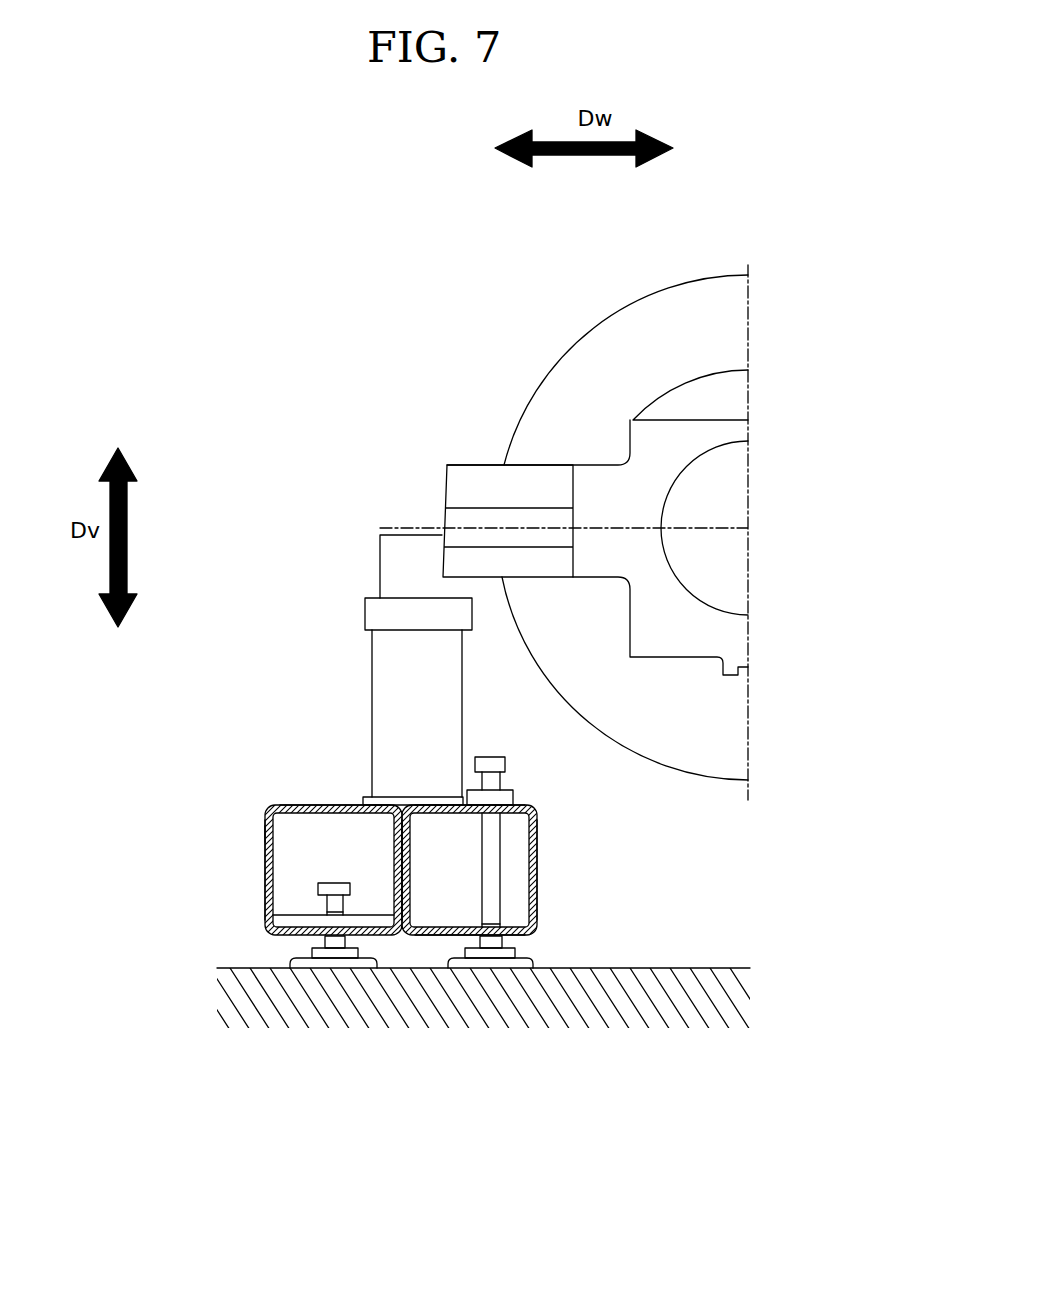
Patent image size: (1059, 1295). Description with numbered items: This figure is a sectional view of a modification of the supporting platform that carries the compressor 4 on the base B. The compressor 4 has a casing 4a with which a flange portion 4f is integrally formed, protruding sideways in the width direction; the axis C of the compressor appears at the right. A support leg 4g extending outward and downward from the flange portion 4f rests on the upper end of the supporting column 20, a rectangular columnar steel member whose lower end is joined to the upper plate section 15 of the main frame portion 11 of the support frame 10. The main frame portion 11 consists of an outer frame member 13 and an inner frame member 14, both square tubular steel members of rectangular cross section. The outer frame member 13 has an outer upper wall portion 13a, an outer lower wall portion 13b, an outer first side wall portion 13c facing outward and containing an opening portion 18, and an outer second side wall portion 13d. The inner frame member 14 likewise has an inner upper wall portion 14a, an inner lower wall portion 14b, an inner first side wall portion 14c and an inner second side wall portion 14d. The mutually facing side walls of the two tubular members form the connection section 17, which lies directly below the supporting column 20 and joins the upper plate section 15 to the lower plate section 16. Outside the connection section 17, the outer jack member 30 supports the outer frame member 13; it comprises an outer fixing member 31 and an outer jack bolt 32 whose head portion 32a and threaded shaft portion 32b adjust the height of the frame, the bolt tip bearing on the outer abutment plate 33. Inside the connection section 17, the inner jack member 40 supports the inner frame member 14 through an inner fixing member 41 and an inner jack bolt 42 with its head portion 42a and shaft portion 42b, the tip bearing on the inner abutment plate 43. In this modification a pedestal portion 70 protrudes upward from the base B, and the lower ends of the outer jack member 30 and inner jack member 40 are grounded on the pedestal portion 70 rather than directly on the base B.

The compressor 4 is at (607, 320).
The casing 4a is at (533, 393).
The flange portion 4f is at (438, 510).
The support leg 4g is at (397, 535).
The axis C is at (747, 527).
The supporting column 20 is at (372, 640).
The upper plate section 15 is at (368, 795).
The outer fixing member 31 is at (360, 913).
The support frame 10 is at (442, 797).
The outer frame member 13 is at (265, 807).
The outer upper wall portion 13a is at (273, 803).
The outer lower wall portion 13b is at (275, 915).
The outer first side wall portion 13c is at (265, 855).
The outer second side wall portion 13d is at (394, 890).
The main frame portion 11 is at (265, 830).
The opening portion 18 is at (265, 838).
The outer jack member 30 is at (322, 900).
The outer jack bolt 32 is at (333, 883).
The head portion 32a is at (340, 883).
The shaft portion 32b is at (318, 888).
The inner frame member 14 is at (537, 817).
The inner upper wall portion 14a is at (527, 800).
The inner lower wall portion 14b is at (537, 920).
The inner first side wall portion 14c is at (410, 895).
The inner second side wall portion 14d is at (537, 885).
The inner jack member 40 is at (537, 908).
The inner fixing member 41 is at (513, 788).
The inner jack bolt 42 is at (480, 757).
The head portion 42a is at (505, 757).
The shaft portion 42b is at (500, 902).
The pedestal portion 70 is at (313, 945).
The outer abutment plate 33 is at (290, 960).
The inner abutment plate 43 is at (513, 952).
The lower plate section 16 is at (455, 972).
The connection section 17 is at (365, 1107).
The base B is at (733, 965).